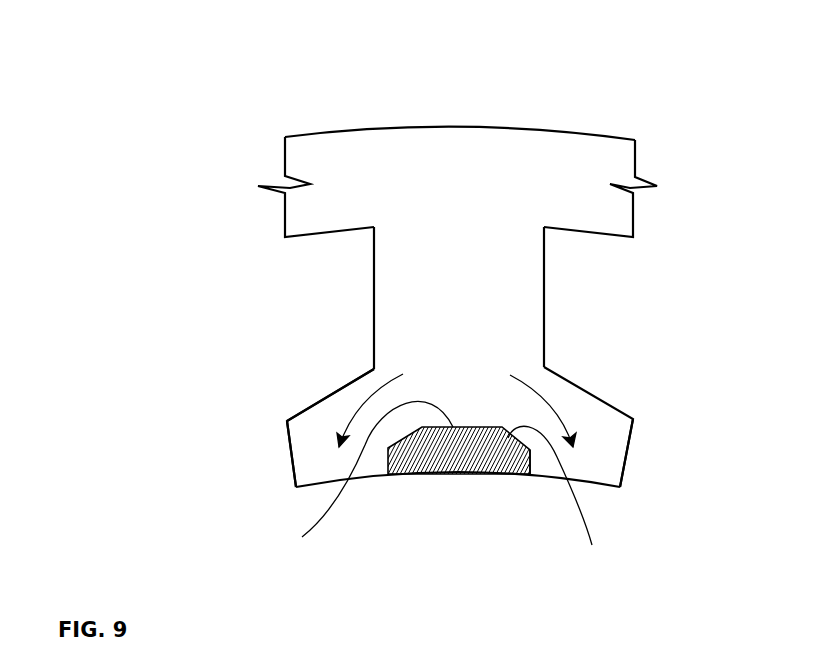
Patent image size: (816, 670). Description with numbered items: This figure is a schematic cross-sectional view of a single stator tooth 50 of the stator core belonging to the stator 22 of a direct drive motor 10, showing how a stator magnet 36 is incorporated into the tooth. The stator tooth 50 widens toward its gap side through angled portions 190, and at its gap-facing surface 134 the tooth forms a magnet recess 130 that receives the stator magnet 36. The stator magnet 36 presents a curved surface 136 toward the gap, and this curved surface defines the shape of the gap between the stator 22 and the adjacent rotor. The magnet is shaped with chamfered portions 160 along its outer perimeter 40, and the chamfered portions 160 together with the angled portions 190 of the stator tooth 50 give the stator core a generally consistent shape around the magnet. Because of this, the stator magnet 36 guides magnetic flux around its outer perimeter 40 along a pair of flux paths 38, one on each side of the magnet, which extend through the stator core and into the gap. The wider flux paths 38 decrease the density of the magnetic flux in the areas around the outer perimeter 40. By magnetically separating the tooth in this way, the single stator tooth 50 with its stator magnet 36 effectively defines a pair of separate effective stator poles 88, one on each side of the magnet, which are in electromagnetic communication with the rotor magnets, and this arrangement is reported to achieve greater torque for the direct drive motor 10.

The direct drive motor 10 is at (450, 95).
The stator 22 is at (357, 123).
The stator tooth 50 is at (504, 287).
The angled portion 190 is at (337, 393).
The flux path 38 is at (353, 412).
The effective stator pole 88 is at (297, 487).
The gap-facing surface 134 is at (368, 477).
The stator magnet 36 is at (447, 455).
The curved surface 136 is at (418, 474).
The magnet recess 130 is at (357, 482).
The chamfered portion 160 is at (561, 500).
The outer perimeter 40 is at (532, 463).